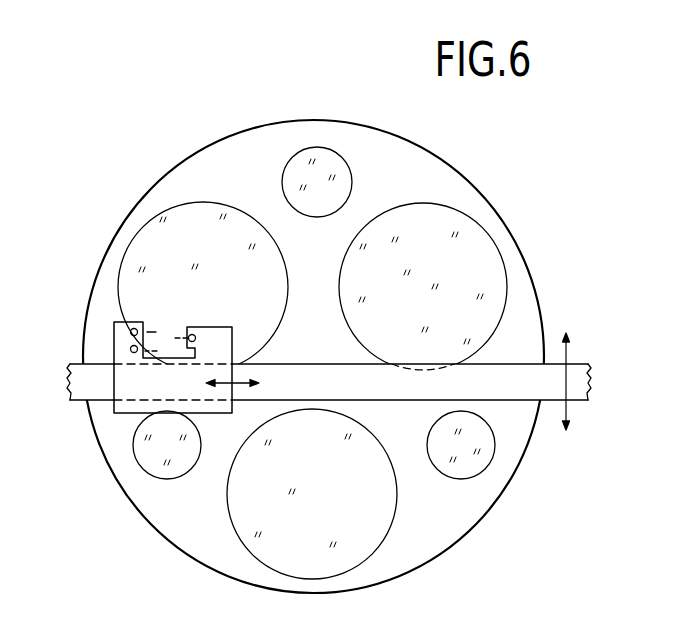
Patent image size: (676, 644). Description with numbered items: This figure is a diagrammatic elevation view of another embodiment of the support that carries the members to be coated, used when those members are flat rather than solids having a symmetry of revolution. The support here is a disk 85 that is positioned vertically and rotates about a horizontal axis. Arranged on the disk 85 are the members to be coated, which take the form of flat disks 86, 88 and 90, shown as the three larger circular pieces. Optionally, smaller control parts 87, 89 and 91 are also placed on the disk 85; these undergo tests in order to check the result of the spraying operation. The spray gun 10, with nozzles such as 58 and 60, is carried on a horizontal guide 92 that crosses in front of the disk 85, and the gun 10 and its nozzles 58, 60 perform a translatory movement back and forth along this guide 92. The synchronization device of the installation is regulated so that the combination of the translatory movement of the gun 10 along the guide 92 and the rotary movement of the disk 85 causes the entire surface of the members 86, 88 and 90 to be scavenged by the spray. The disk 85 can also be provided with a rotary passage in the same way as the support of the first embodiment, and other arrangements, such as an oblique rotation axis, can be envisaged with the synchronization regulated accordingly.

The gun 10 is at (205, 325).
The nozzle 58 is at (131, 332).
The nozzle 60 is at (131, 349).
The disk 85 is at (107, 252).
The flat disk 86 is at (173, 230).
The control part 87 is at (295, 163).
The flat disk 88 is at (453, 220).
The control part 89 is at (470, 457).
The flat disk 90 is at (243, 518).
The control part 91 is at (148, 462).
The guide 92 is at (517, 367).